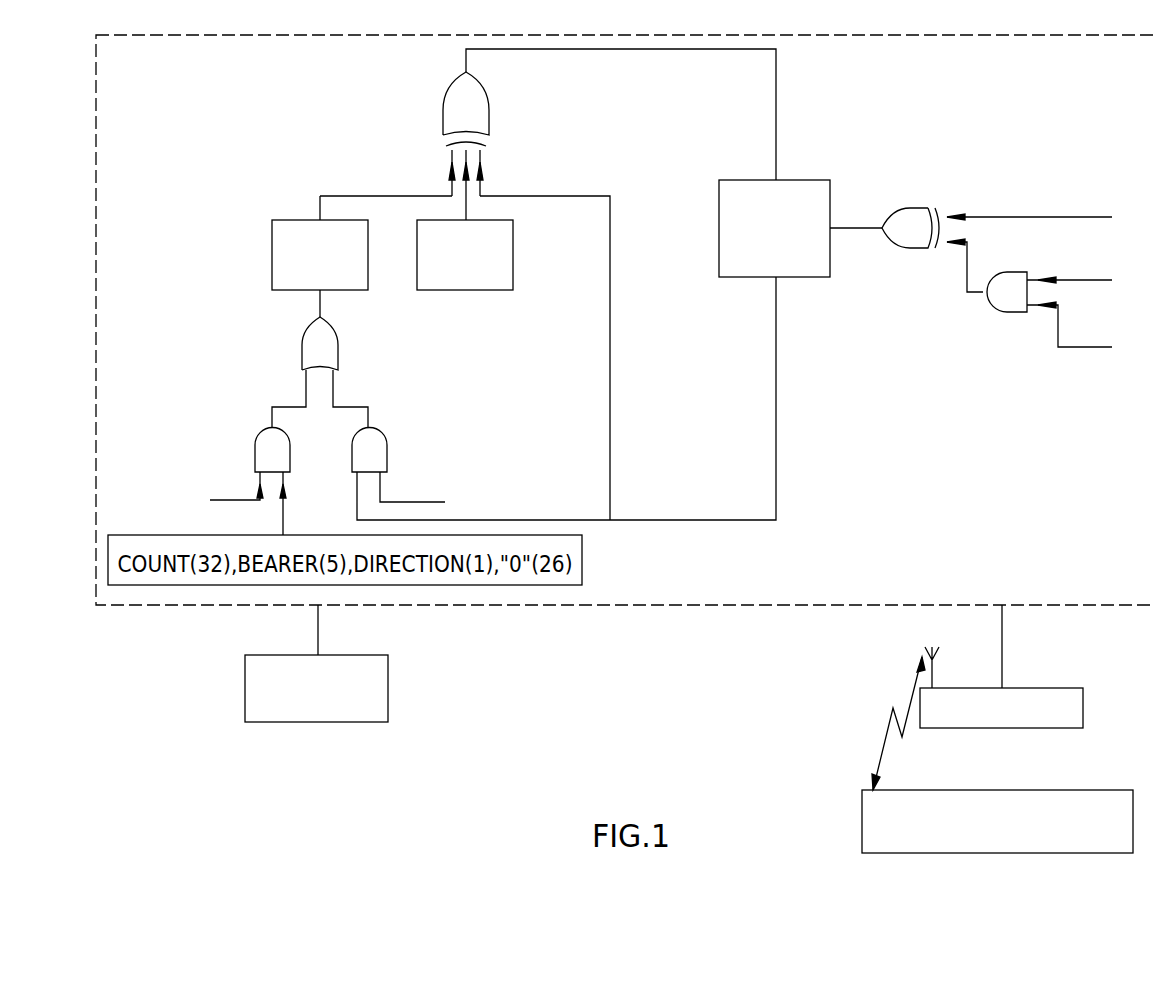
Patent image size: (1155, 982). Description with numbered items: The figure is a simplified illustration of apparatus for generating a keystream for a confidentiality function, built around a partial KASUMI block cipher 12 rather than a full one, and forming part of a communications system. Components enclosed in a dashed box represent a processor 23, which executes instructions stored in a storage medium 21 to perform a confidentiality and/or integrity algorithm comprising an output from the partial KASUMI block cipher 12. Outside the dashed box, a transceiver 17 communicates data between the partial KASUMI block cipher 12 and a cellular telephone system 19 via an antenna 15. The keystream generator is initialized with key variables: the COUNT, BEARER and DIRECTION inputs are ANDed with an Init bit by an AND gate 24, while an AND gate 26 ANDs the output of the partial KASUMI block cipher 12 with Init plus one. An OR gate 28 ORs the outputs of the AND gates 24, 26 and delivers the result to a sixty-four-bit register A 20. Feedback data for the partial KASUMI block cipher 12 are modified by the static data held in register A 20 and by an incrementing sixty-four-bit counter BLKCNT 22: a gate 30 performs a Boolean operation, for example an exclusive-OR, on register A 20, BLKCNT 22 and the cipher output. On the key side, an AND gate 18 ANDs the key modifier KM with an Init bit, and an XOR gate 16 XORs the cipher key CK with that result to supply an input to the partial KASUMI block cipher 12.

The partial KASUMI block cipher 12 is at (748, 192).
The antenna 15 is at (934, 670).
The XOR gate 16 is at (912, 220).
The transceiver 17 is at (1063, 688).
The AND gate 18 is at (1013, 303).
The cellular telephone system 19 is at (1108, 790).
The register A 20 is at (278, 252).
The storage medium 21 is at (245, 688).
The counter BLKCNT 22 is at (508, 258).
The processor 23 is at (750, 605).
The AND gate 24 is at (258, 453).
The AND gate 26 is at (382, 457).
The OR gate 28 is at (330, 347).
The gate 30 is at (475, 108).